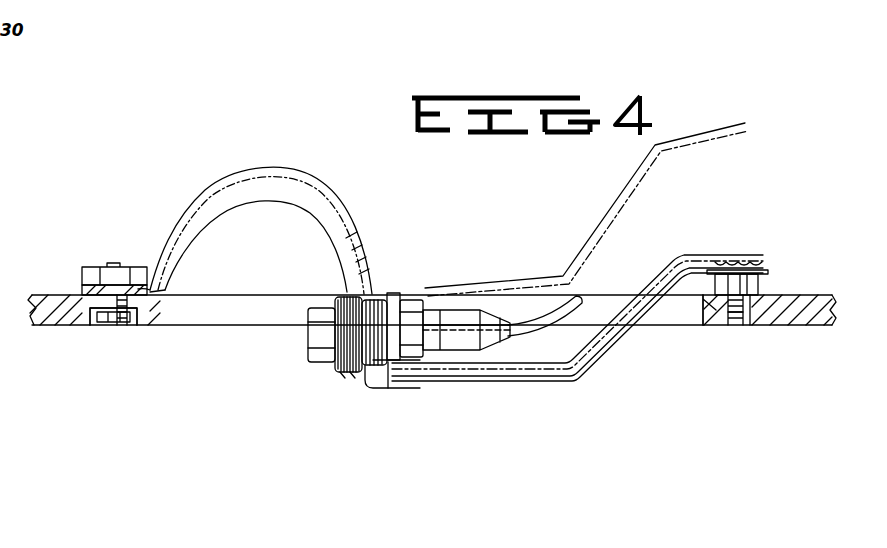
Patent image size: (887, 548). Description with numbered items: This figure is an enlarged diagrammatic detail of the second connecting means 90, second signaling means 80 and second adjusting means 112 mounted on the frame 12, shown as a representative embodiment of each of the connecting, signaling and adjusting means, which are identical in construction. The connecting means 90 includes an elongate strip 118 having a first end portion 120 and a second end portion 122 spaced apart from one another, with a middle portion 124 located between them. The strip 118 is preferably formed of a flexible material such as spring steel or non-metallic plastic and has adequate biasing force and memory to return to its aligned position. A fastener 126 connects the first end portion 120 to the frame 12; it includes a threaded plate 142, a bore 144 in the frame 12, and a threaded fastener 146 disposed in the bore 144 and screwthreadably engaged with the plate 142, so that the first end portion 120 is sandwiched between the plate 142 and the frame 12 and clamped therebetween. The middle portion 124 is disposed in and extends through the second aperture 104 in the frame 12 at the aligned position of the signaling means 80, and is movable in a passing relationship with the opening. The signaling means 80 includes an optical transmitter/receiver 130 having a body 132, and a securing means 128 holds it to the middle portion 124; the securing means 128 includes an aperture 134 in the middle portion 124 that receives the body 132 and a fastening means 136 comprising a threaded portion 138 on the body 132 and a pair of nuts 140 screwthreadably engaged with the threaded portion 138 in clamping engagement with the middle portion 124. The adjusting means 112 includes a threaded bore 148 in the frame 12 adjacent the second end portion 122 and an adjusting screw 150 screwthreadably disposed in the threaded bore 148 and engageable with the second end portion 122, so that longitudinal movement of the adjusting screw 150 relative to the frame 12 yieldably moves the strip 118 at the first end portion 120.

The frame 12 is at (836, 304).
The second signaling means 80 is at (614, 352).
The second connecting means 90 is at (483, 307).
The second aperture 104 is at (697, 308).
The second adjusting means 112 is at (736, 340).
The elongate strip 118 is at (565, 385).
The first end portion 120 is at (148, 297).
The second end portion 122 is at (702, 283).
The middle portion 124 is at (410, 278).
The fastener 126 is at (98, 325).
The securing means 128 is at (326, 382).
The optical transmitter/receiver 130 is at (306, 340).
The body 132 is at (488, 344).
The aperture 134 is at (398, 393).
The fastening means 136 is at (333, 294).
The threaded portion 138 is at (412, 312).
The pair of nuts 140 is at (380, 382).
The threaded plate 142 is at (134, 266).
The bore 144 is at (110, 326).
The threaded fastener 146 is at (100, 296).
The threaded bore 148 is at (742, 318).
The adjusting screw 150 is at (762, 284).